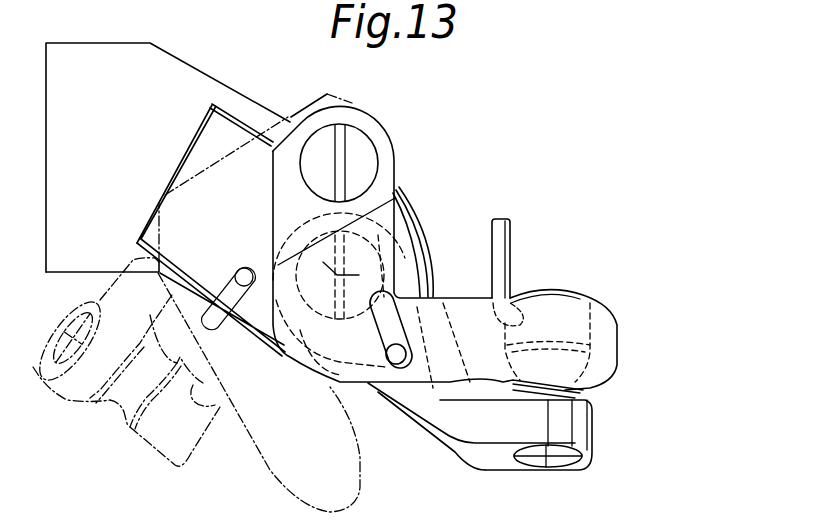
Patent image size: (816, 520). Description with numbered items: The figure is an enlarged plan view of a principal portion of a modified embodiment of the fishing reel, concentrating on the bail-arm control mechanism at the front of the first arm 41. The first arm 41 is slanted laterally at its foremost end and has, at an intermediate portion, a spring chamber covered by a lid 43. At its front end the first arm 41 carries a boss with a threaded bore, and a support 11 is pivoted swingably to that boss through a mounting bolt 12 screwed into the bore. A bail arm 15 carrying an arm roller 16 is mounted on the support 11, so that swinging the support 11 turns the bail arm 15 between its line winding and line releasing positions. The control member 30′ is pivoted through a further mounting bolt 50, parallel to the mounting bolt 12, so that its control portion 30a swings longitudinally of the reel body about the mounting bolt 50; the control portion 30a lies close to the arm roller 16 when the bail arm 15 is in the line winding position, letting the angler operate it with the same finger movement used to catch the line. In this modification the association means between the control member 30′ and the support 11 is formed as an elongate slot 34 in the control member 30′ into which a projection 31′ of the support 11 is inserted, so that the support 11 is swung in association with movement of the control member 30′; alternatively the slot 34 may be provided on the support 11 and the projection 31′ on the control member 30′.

The support 11 is at (594, 432).
The mounting bolt 12 is at (388, 198).
The bail arm 15 is at (510, 252).
The arm roller 16 is at (591, 302).
The control member 30′ is at (388, 247).
The control portion 30a is at (603, 352).
The projection 31′ is at (397, 373).
The elongate slot 34 is at (392, 300).
The first arm 41 is at (235, 110).
The lid 43 is at (213, 130).
The mounting bolt 50 is at (356, 148).